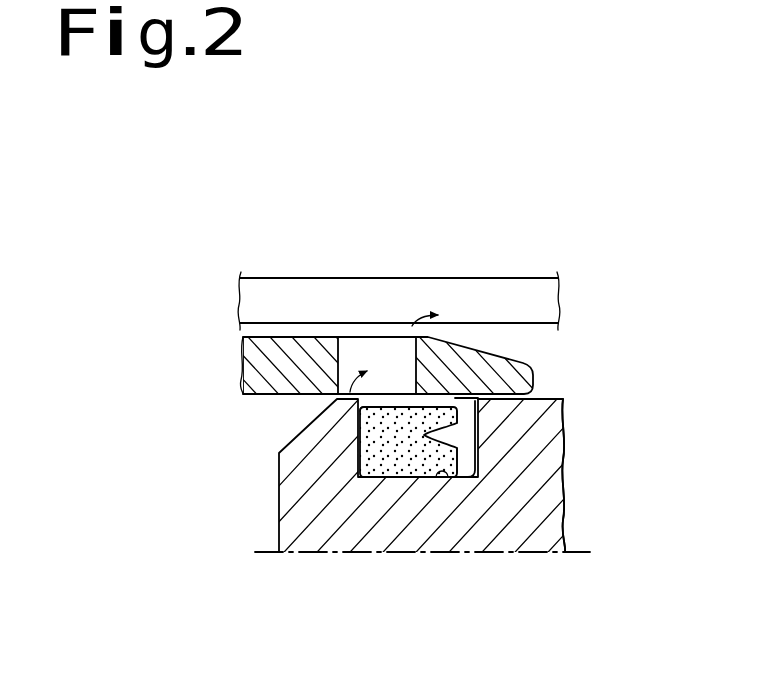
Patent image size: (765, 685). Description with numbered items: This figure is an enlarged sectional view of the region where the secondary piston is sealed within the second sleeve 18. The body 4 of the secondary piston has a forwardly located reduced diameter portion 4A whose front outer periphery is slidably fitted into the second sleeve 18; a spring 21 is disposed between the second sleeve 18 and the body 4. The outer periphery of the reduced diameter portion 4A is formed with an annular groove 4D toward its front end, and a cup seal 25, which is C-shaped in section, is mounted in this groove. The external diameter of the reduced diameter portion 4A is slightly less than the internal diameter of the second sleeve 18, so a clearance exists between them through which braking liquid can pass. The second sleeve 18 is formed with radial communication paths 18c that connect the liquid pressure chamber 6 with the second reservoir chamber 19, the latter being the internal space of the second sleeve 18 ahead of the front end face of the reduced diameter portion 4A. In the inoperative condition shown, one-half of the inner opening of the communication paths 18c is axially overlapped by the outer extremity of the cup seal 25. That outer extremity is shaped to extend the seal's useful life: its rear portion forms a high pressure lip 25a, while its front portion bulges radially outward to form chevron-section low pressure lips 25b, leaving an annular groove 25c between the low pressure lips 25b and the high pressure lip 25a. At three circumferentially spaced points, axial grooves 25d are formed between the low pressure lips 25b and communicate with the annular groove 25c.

The spring 21 is at (497, 290).
The liquid pressure chamber 6 is at (517, 330).
The second sleeve 18 is at (248, 373).
The communication paths 18c is at (408, 352).
The second reservoir chamber 19 is at (150, 457).
The body 4 is at (290, 496).
The reduced diameter portion 4A is at (553, 428).
The annular groove 4D is at (445, 480).
The cup seal 25 is at (405, 480).
The high pressure lip 25a is at (457, 400).
The low pressure lips 25b is at (386, 402).
The annular groove 25c is at (392, 398).
The axial grooves 25d is at (392, 405).